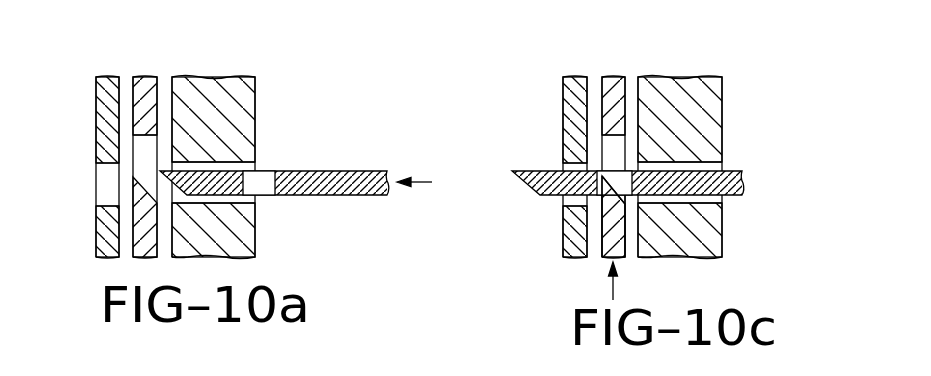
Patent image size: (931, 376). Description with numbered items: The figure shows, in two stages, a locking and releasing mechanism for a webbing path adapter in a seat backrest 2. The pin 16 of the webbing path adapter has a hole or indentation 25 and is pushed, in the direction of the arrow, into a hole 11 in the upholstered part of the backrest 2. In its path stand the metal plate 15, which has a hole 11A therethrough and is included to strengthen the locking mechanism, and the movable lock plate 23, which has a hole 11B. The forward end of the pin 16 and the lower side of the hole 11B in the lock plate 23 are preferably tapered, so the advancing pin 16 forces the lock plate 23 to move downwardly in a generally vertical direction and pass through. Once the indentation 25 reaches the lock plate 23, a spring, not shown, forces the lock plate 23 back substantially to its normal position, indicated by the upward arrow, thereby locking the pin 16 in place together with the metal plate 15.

In FIG. 10A, the backrest 2 is at (256, 118).
In FIG. 10C, the backrest 2 is at (723, 118).
In FIG. 10A, the hole 11 is at (233, 162).
In FIG. 10A, the hole 11A is at (115, 206).
In FIG. 10A, the hole 11B is at (143, 135).
In FIG. 10A, the metal plate 15 is at (108, 110).
In FIG. 10C, the metal plate 15 is at (575, 112).
In FIG. 10A, the pin 16 is at (355, 180).
In FIG. 10C, the pin 16 is at (728, 175).
In FIG. 10A, the lock plate 23 is at (146, 95).
In FIG. 10A, the indentation 25 is at (272, 196).